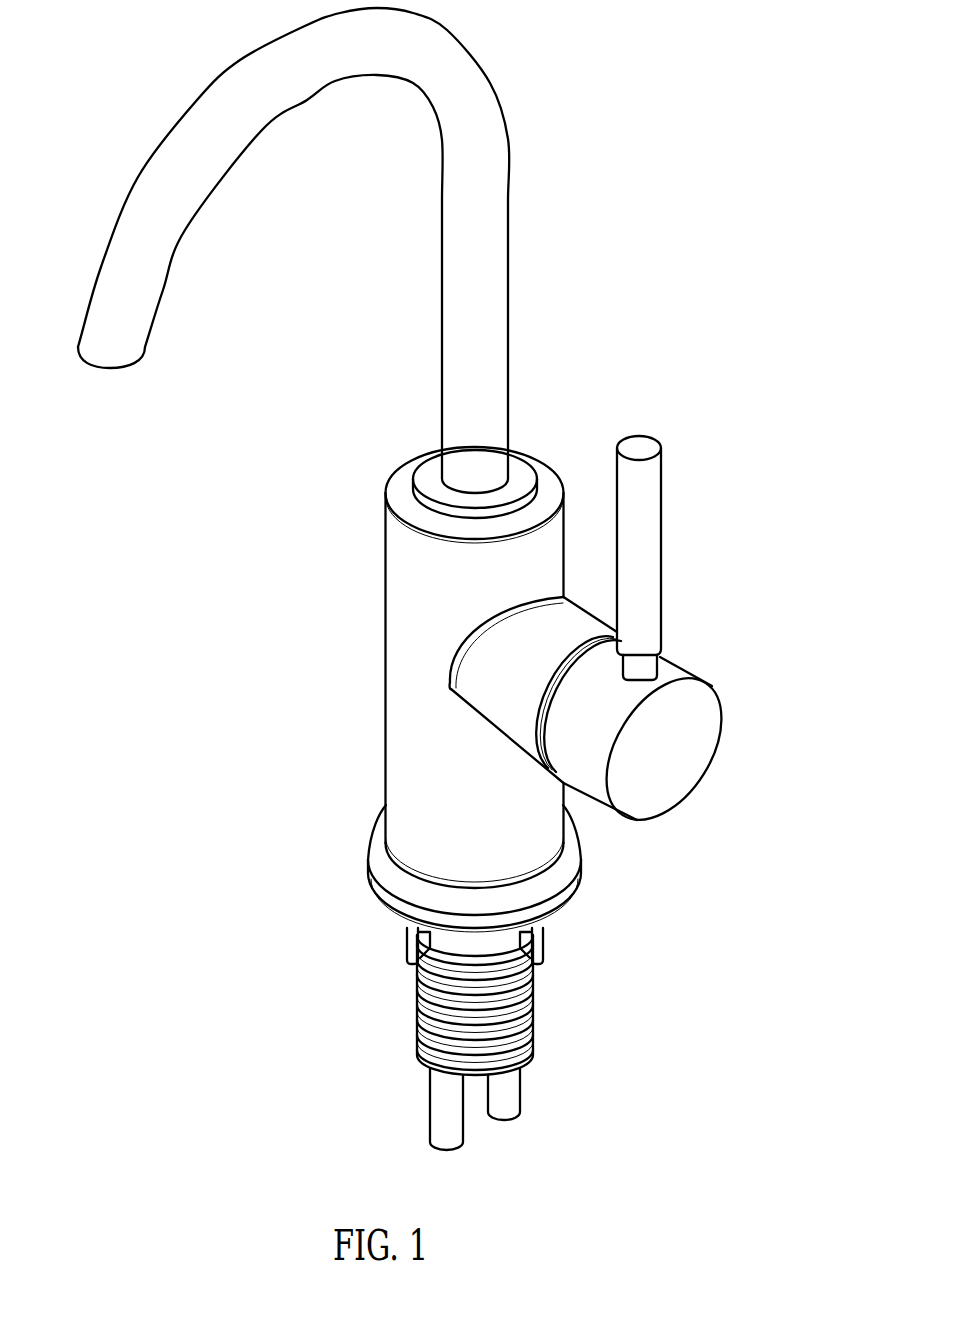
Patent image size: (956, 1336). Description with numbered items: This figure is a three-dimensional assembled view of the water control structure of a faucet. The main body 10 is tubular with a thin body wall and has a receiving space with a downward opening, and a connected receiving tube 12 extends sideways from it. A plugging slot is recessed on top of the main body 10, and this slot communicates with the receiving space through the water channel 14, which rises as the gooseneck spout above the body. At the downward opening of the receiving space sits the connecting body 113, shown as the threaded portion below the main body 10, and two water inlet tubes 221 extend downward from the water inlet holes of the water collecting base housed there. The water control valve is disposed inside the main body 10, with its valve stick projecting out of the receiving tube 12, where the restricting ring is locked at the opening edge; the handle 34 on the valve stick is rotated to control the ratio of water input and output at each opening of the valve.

The main body 10 is at (405, 632).
The receiving tube 12 is at (566, 620).
The water channel 14 is at (485, 284).
The handle 34 is at (685, 732).
The connecting body 113 is at (441, 1002).
The water inlet tubes 221 is at (505, 1112).